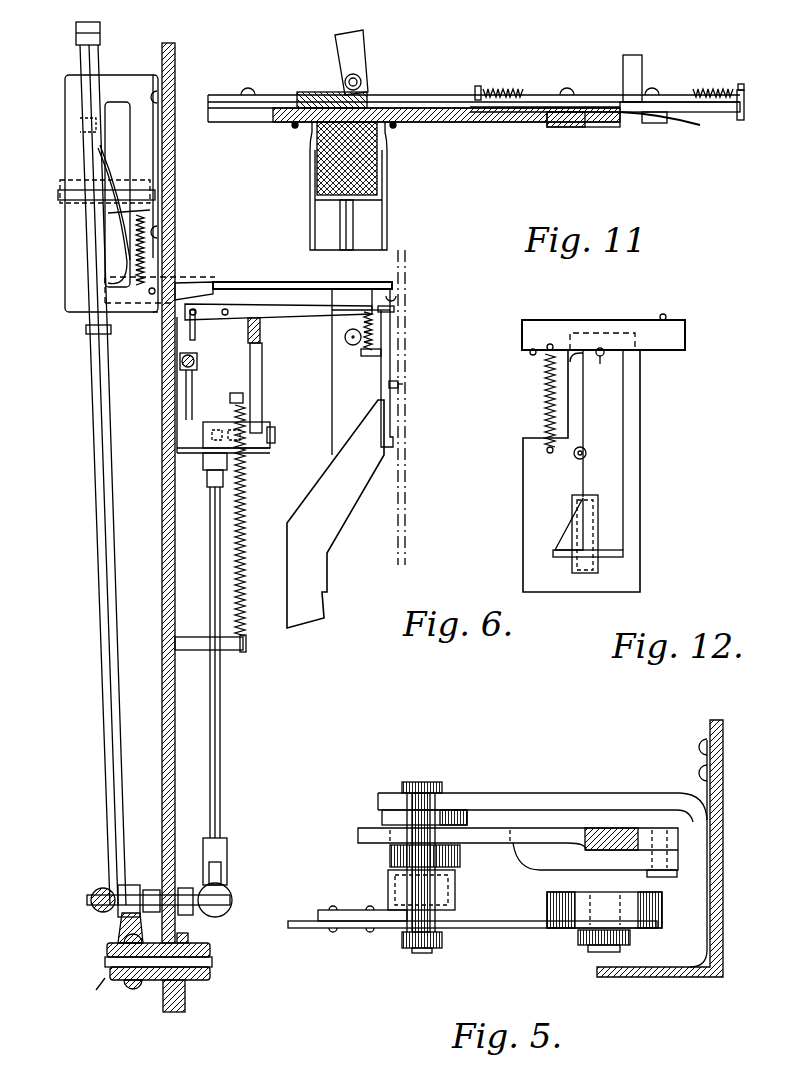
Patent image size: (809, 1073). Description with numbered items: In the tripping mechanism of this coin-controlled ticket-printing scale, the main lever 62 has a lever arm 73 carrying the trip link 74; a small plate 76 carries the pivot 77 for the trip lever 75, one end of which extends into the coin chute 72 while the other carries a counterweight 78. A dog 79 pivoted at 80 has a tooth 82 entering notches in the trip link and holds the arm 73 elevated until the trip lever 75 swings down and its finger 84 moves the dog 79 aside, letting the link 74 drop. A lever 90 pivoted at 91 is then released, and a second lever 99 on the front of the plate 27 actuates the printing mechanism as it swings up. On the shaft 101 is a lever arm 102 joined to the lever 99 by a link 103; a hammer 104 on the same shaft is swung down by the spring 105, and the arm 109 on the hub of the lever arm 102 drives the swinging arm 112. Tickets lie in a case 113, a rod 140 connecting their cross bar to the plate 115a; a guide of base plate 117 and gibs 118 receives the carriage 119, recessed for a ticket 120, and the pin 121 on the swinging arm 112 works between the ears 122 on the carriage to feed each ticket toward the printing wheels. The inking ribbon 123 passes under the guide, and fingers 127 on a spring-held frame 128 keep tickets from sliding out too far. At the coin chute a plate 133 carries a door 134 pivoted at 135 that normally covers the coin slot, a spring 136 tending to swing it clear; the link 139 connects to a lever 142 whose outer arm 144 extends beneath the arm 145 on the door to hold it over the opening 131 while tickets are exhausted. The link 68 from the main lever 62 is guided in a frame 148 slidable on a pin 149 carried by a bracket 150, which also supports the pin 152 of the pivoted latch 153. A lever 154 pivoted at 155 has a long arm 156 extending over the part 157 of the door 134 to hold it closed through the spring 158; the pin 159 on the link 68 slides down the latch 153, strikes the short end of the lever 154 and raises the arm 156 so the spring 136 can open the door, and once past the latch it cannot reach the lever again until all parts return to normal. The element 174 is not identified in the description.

In FIG. 6, the plate 27 is at (161, 762).
In FIG. 6, the main lever 62 is at (129, 962).
In FIG. 6, the link 68 is at (102, 531).
In FIG. 6, the coin chute 72 is at (320, 579).
In FIG. 6, the lever arm 73 is at (101, 882).
In FIG. 5, the trip link 74 is at (610, 826).
In FIG. 5, the trip lever 75 is at (301, 929).
In FIG. 5, the small plate 76 is at (541, 793).
In FIG. 5, the pivot 77 is at (428, 950).
In FIG. 5, the counterweight 78 is at (550, 909).
In FIG. 5, the dog 79 is at (583, 861).
In FIG. 5, the pivot 80 is at (665, 876).
In FIG. 5, the tooth 82 is at (640, 838).
In FIG. 5, the finger 84 is at (490, 855).
In FIG. 6, the lever 90 is at (81, 995).
In FIG. 6, the pivot 91 is at (212, 961).
In FIG. 6, the second lever 99 is at (190, 915).
In FIG. 6, the shaft 101 is at (275, 437).
In FIG. 6, the lever arm 102 is at (222, 428).
In FIG. 6, the link 103 is at (221, 714).
In FIG. 6, the hammer 104 is at (259, 371).
In FIG. 6, the spring 105 is at (246, 519).
In FIG. 6, the arm 109 is at (199, 382).
In FIG. 11, the swinging arm 112 is at (361, 56).
In FIG. 11, the case 113 is at (388, 223).
In FIG. 11, the plate 115a is at (372, 200).
In FIG. 11, the base plate 117 is at (441, 112).
In FIG. 11, the gibs 118 is at (272, 95).
In FIG. 11, the carriage 119 is at (316, 92).
In FIG. 11, the ticket 120 is at (500, 113).
In FIG. 11, the pin 121 is at (362, 83).
In FIG. 11, the ears 122 is at (357, 71).
In FIG. 11, the inking ribbon 123 is at (622, 68).
In FIG. 11, the fingers 127 is at (738, 121).
In FIG. 11, the spring-held frame 128 is at (680, 101).
In FIG. 12, the opening 131 is at (579, 502).
In FIG. 6, the plate 133 is at (389, 385).
In FIG. 12, the plate 133 is at (522, 528).
In FIG. 6, the door 134 is at (392, 338).
In FIG. 12, the door 134 is at (610, 456).
In FIG. 12, the pivot 135 is at (606, 366).
In FIG. 6, the spring 136 is at (371, 334).
In FIG. 12, the spring 136 is at (546, 396).
In FIG. 6, the link 139 is at (196, 335).
In FIG. 11, the rod 140 is at (345, 227).
In FIG. 6, the lever 142 is at (240, 309).
In FIG. 6, the outer arm 144 is at (343, 312).
In FIG. 6, the arm 145 is at (369, 300).
In FIG. 12, the arm 145 is at (535, 328).
In FIG. 6, the frame 148 is at (86, 328).
In FIG. 6, the pin 149 is at (75, 195).
In FIG. 6, the bracket 150 is at (70, 274).
In FIG. 6, the pin 152 is at (105, 186).
In FIG. 6, the latch 153 is at (112, 212).
In FIG. 6, the lever 154 is at (178, 286).
In FIG. 6, the pivot 155 is at (152, 295).
In FIG. 6, the long arm 156 is at (295, 288).
In FIG. 12, the long arm 156 is at (666, 317).
In FIG. 12, the part 157 is at (664, 340).
In FIG. 6, the spring 158 is at (145, 248).
In FIG. 6, the pin 159 is at (74, 128).
In FIG. 12, the pin 174 is at (530, 353).